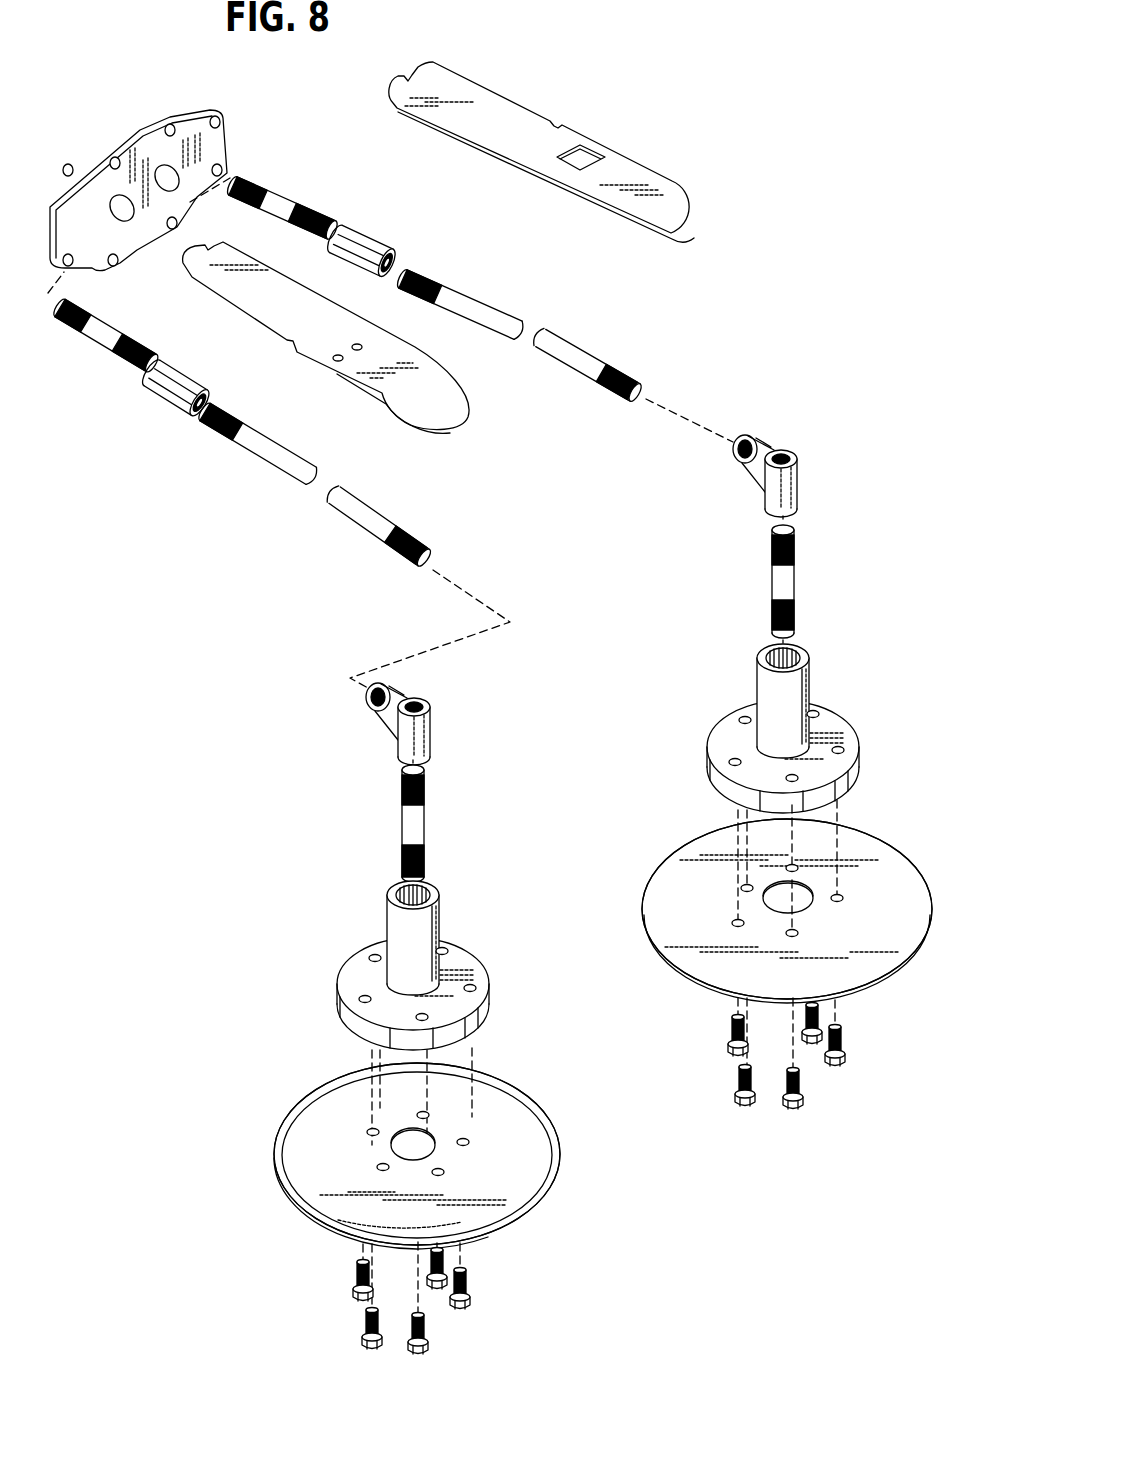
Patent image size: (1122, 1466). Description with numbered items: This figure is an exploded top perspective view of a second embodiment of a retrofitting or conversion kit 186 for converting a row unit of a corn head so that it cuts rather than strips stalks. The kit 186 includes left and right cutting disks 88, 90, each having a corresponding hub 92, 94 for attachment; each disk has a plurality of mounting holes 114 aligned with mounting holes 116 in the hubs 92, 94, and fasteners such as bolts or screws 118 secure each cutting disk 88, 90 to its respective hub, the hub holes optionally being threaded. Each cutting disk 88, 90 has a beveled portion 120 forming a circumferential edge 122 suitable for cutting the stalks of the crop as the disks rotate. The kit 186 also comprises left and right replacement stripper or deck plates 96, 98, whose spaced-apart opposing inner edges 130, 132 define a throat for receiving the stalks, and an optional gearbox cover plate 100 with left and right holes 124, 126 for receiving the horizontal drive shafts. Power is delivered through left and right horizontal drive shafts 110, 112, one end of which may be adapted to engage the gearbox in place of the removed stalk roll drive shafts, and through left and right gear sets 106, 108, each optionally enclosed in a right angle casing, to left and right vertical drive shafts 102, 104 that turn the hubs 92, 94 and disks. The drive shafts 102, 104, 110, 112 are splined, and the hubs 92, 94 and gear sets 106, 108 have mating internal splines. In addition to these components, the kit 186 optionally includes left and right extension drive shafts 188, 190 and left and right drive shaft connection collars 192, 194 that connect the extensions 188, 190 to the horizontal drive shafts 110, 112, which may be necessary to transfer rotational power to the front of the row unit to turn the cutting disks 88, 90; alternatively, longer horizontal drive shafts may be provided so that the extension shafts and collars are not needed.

The left cutting disk 88 is at (796, 708).
The right cutting disk 90 is at (412, 961).
The hub 92 is at (722, 736).
The hub 94 is at (352, 941).
The left replacement deck plate 96 is at (541, 156).
The right replacement deck plate 98 is at (312, 340).
The gearbox cover plate 100 is at (148, 148).
The left vertical drive shaft 102 is at (816, 583).
The right vertical drive shaft 104 is at (447, 831).
The left gear set 106 is at (812, 471).
The right gear set 108 is at (445, 716).
The left horizontal drive shaft 110 is at (294, 178).
The right horizontal drive shaft 112 is at (102, 355).
The mounting holes 114 is at (845, 898).
The mounting holes 116 is at (799, 779).
The screws 118 is at (842, 1070).
The beveled portion 120 is at (640, 880).
The circumferential edge 122 is at (655, 962).
The left hole 124 is at (174, 166).
The right hole 126 is at (113, 206).
The inner edge 130 is at (568, 200).
The inner edge 132 is at (410, 346).
The conversion kit 186 is at (828, 282).
The left extension drive shaft 188 is at (575, 395).
The right extension drive shaft 190 is at (290, 530).
The left drive shaft connection collar 192 is at (380, 222).
The right drive shaft connection collar 194 is at (178, 424).